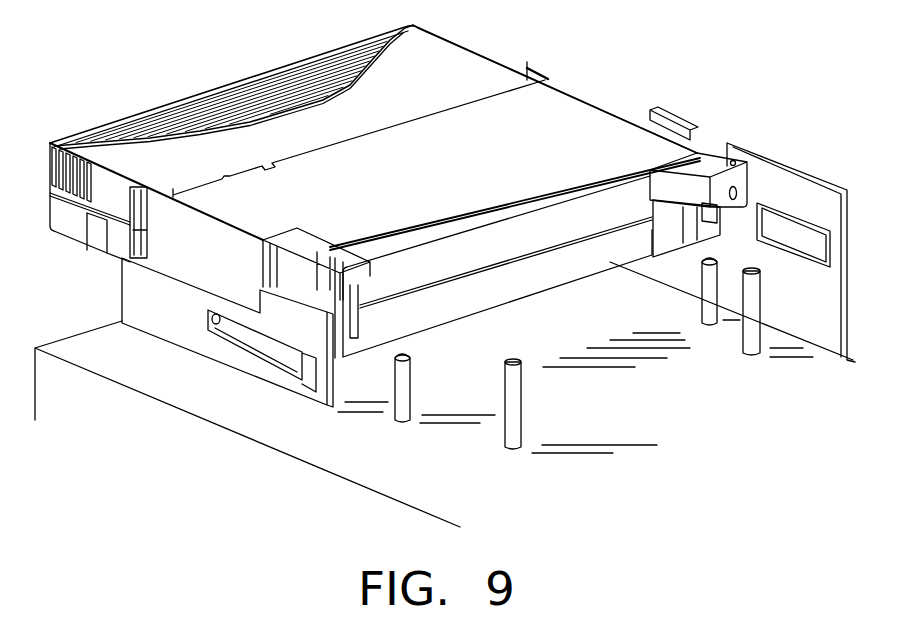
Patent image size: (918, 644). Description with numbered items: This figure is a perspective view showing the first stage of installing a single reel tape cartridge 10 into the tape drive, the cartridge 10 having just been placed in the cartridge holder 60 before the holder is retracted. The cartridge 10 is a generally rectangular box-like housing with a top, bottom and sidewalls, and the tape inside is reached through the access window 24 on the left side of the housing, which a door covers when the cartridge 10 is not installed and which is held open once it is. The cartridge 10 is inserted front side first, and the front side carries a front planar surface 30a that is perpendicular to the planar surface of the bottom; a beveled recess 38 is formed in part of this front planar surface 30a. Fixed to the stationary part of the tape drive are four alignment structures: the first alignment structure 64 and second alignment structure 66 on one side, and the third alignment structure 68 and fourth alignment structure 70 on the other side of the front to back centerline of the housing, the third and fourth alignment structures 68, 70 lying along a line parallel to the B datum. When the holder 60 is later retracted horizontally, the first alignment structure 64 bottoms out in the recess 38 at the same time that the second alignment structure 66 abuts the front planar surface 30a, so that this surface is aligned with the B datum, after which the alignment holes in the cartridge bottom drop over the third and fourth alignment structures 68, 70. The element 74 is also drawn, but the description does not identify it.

The single reel tape cartridge 10 is at (531, 33).
The access window 24 is at (297, 272).
The front planar surface 30a is at (448, 323).
The beveled recess 38 is at (667, 240).
The cartridge holder 60 is at (610, 113).
The first alignment structure 64 is at (753, 347).
The second alignment structure 66 is at (512, 440).
The third alignment structure 68 is at (710, 317).
The fourth alignment structure 70 is at (401, 418).
The base surface 74 is at (612, 443).